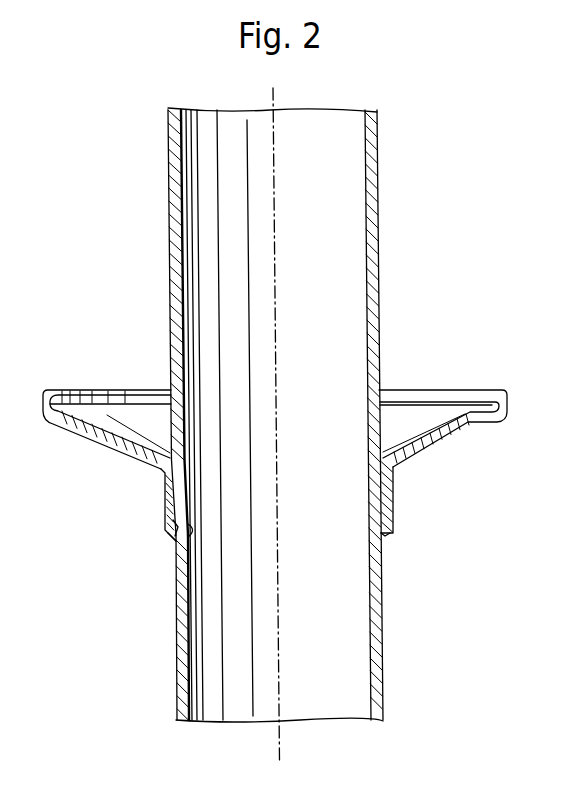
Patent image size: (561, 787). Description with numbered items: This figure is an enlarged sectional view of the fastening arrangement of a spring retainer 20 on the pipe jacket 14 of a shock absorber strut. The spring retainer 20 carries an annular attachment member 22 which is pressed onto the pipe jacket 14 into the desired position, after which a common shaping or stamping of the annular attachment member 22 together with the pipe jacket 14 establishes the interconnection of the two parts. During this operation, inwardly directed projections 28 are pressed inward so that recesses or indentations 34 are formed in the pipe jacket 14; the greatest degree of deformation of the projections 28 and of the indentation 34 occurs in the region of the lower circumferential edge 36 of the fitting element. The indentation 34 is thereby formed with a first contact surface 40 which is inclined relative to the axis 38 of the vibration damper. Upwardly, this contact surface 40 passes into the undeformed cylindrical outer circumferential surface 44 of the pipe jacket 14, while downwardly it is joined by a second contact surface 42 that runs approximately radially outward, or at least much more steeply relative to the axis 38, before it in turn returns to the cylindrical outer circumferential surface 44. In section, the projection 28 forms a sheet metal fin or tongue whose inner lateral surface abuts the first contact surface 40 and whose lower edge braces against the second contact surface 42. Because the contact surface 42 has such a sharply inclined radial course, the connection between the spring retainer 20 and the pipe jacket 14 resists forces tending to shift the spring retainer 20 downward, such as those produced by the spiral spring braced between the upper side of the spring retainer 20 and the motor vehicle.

The pipe jacket 14 is at (381, 182).
The axis 38 is at (274, 125).
The spring retainer 20 is at (440, 437).
The annular attachment member 22 is at (388, 503).
The lower circumferential edge 36 is at (388, 537).
The inwardly directed projection 28 is at (165, 502).
The first contact surface 40 is at (169, 523).
The second contact surface 42 is at (170, 531).
The indentation 34 is at (198, 530).
The cylindrical outer circumferential surface 44 is at (169, 603).